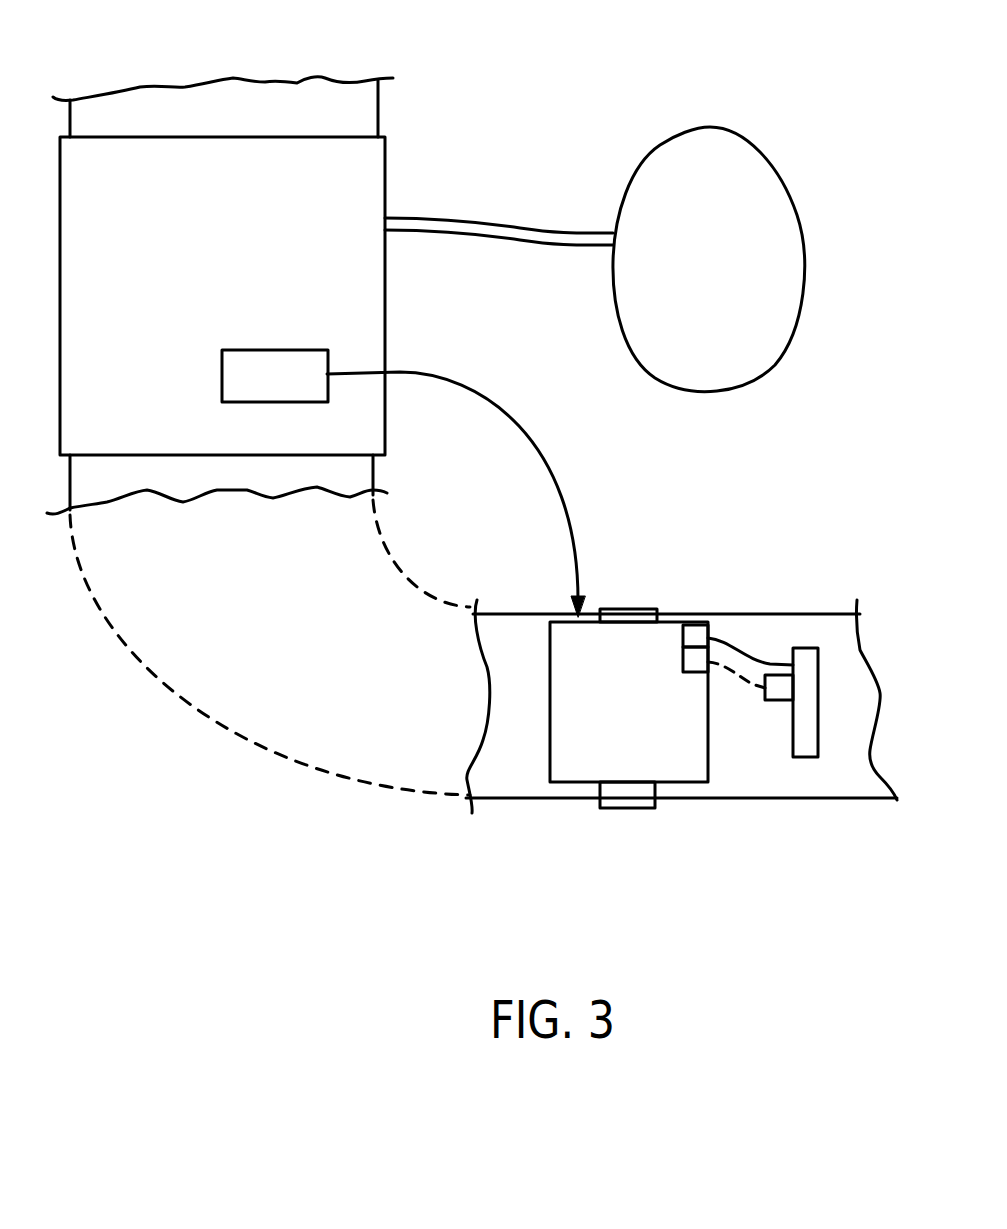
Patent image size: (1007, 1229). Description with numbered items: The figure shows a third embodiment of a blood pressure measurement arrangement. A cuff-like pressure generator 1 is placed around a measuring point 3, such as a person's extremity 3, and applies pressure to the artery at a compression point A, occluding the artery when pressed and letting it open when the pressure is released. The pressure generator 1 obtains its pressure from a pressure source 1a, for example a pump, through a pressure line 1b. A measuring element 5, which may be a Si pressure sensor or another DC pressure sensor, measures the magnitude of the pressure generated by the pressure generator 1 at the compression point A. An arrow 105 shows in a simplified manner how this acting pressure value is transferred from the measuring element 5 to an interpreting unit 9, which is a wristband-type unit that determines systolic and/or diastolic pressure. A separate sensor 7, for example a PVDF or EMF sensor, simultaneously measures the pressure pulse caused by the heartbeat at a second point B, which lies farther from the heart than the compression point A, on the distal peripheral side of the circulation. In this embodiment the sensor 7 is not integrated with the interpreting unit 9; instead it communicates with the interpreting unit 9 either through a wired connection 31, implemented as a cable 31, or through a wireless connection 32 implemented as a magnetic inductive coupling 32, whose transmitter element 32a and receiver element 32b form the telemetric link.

The measuring point 3 is at (243, 100).
The pressure generator 1 is at (373, 182).
The pressure source 1a is at (689, 158).
The pressure line 1b is at (510, 213).
The measuring element 5 is at (263, 358).
The arrow 105 is at (487, 387).
The compression point A is at (367, 475).
The second point B is at (775, 638).
The wired connection 31 is at (742, 635).
The interpreting unit 9 is at (698, 697).
The receiver element 32b is at (683, 660).
The wireless connection 32 is at (745, 680).
The transmitter element 32a is at (778, 700).
The sensor 7 is at (806, 640).